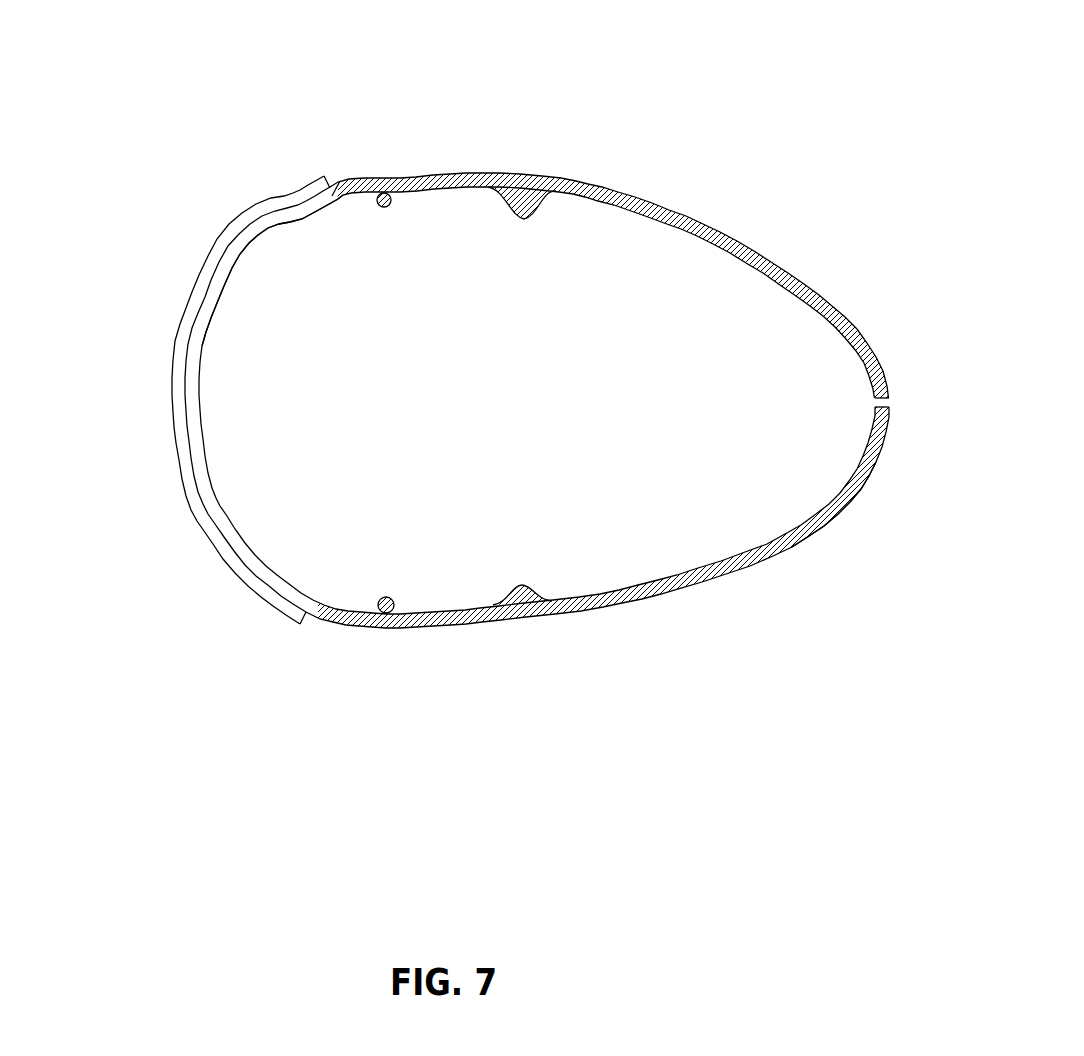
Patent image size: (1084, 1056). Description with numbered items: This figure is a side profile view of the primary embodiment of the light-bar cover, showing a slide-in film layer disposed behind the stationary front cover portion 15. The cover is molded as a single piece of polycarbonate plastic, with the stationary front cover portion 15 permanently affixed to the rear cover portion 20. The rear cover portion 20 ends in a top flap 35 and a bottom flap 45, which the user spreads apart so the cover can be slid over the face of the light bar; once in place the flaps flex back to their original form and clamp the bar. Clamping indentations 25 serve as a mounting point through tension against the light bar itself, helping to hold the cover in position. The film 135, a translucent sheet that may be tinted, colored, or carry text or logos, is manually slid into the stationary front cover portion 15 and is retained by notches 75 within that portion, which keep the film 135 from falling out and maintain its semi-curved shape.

The rear cover portion 20 is at (764, 210).
The film 135 is at (292, 222).
The stationary front cover portion 15 is at (178, 377).
The notches 75 is at (383, 192).
The clamping indentations 25 is at (523, 207).
The top flap 35 is at (882, 378).
The bottom flap 45 is at (855, 490).